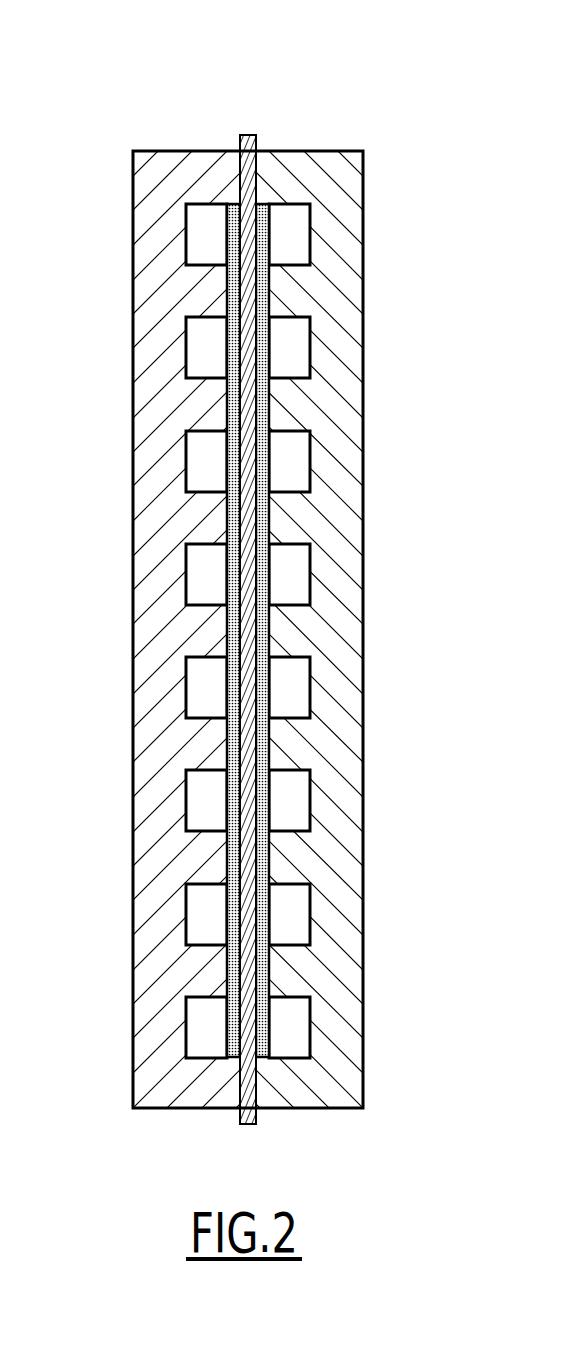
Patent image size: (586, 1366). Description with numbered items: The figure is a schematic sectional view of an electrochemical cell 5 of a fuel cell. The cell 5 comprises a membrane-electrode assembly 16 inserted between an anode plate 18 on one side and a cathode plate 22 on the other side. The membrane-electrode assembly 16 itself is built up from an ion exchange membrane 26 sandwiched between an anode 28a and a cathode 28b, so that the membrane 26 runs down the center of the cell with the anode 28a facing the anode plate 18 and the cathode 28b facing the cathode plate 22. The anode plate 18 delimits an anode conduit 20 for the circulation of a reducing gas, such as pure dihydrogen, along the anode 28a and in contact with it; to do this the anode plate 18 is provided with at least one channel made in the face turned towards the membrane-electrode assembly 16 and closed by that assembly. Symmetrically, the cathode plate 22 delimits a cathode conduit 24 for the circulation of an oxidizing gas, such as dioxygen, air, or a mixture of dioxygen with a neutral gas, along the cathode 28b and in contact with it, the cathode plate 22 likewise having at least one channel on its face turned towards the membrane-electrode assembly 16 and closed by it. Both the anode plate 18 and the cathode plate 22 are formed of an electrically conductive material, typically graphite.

The cell 5 is at (422, 117).
The membrane-electrode assembly 16 is at (249, 120).
The anode plate 18 is at (162, 191).
The anode conduit 20 is at (207, 237).
The cathode plate 22 is at (335, 190).
The cathode conduit 24 is at (288, 237).
The ion exchange membrane 26 is at (246, 1126).
The anode 28a is at (226, 404).
The cathode 28b is at (270, 412).